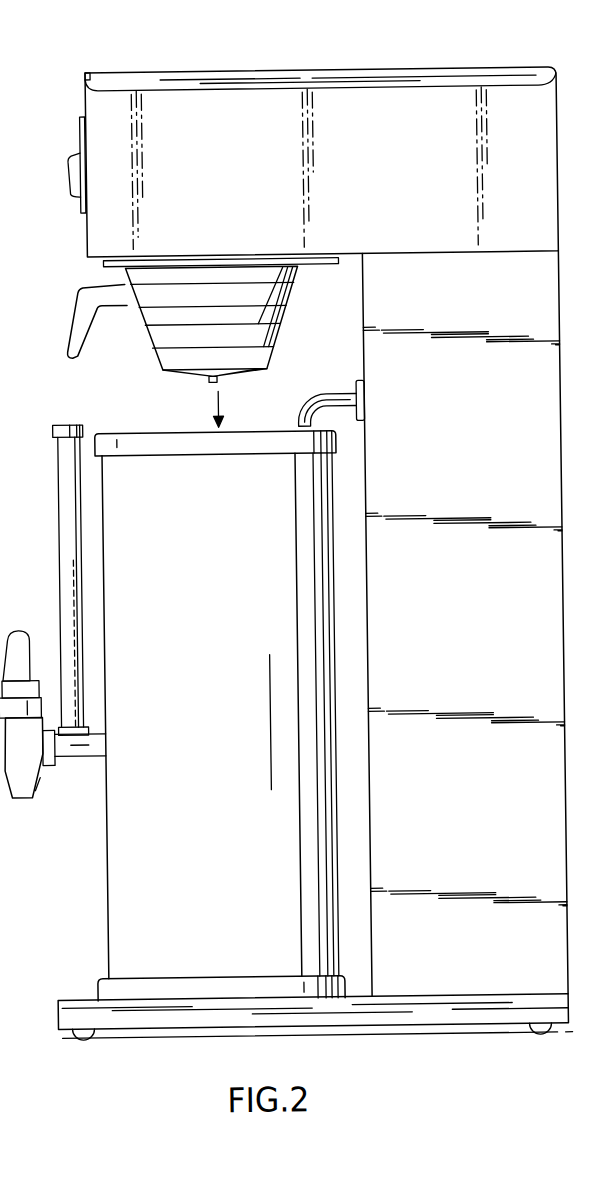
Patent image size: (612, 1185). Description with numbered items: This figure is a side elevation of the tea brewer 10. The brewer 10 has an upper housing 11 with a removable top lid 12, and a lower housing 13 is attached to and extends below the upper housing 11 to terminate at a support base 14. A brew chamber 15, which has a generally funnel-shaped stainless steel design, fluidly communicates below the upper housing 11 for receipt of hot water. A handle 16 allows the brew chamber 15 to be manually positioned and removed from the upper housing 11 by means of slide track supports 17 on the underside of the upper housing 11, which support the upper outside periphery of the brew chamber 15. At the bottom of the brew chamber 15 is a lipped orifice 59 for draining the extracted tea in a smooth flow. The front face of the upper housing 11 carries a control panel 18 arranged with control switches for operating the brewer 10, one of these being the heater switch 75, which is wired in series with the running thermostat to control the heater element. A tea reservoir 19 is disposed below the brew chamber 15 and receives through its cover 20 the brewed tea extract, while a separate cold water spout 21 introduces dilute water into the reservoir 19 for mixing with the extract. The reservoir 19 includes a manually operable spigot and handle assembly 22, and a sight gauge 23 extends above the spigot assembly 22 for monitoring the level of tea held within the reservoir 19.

The tea brewer 10 is at (337, 56).
The upper housing 11 is at (358, 188).
The removable top lid 12 is at (242, 74).
The lower housing 13 is at (436, 767).
The support base 14 is at (433, 1021).
The brew chamber 15 is at (226, 347).
The handle 16 is at (75, 331).
The slide track supports 17 is at (100, 263).
The control panel 18 is at (79, 120).
The tea reservoir 19 is at (162, 559).
The cover 20 is at (165, 449).
The cold water spout 21 is at (326, 397).
The spigot and handle assembly 22 is at (38, 785).
The sight gauge 23 is at (53, 548).
The lipped orifice 59 is at (214, 382).
The heater switch 75 is at (68, 170).